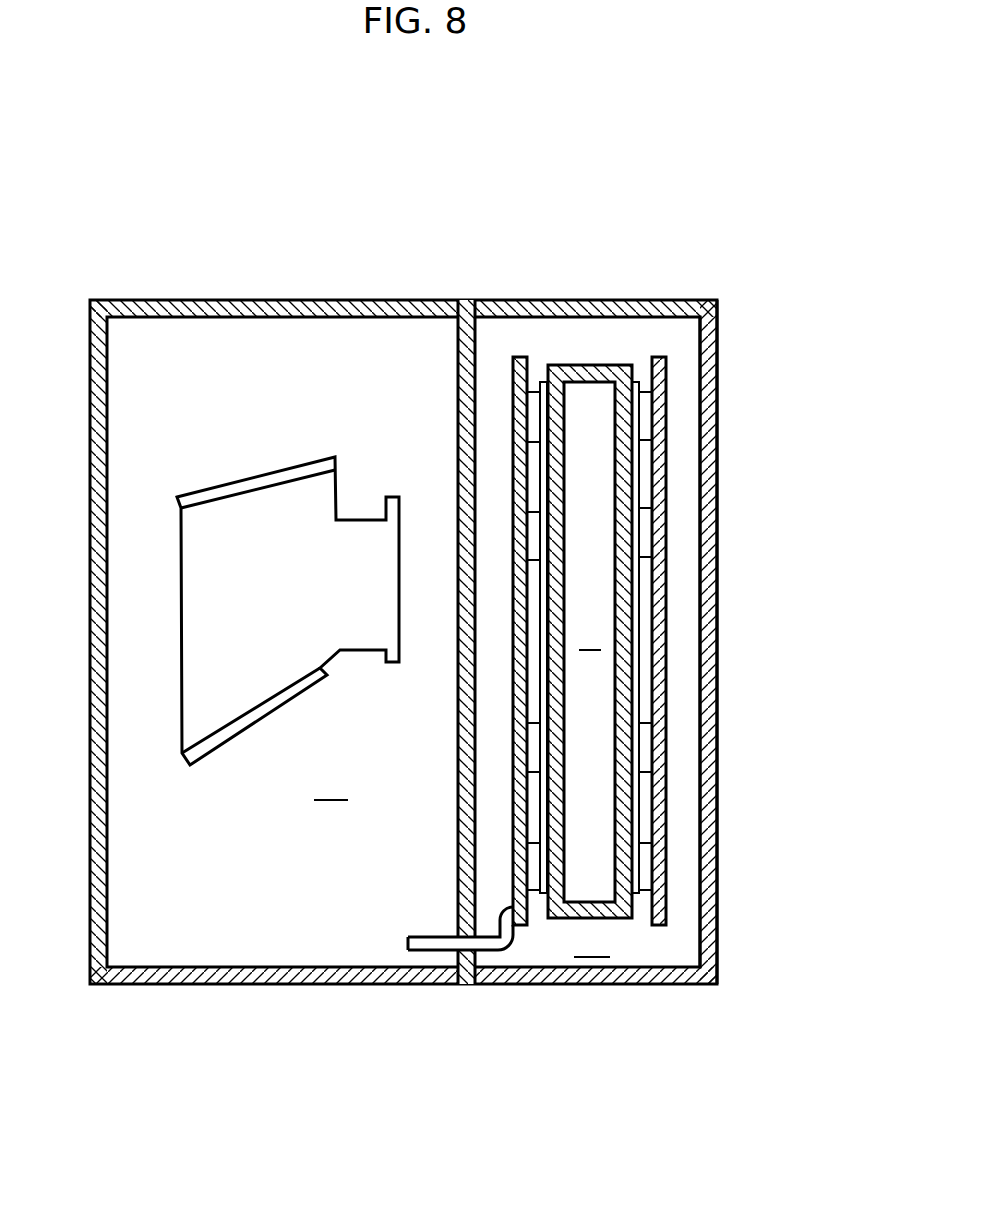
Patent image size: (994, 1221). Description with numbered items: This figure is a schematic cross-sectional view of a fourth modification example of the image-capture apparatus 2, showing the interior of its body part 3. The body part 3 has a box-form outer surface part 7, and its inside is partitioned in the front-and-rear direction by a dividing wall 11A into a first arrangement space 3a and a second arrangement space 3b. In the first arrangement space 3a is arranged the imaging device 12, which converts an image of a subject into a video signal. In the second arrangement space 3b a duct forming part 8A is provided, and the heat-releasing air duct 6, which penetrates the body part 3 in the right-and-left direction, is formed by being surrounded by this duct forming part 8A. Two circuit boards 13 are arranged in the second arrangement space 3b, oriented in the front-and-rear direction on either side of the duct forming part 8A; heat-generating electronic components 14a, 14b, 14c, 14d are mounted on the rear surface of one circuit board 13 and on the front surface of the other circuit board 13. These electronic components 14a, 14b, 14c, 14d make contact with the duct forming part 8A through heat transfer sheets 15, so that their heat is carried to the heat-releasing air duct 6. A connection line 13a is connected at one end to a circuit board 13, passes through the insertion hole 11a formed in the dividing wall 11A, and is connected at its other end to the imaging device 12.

The speaker system 2 is at (622, 177).
The body part 3 is at (448, 642).
The first arrangement space 3a is at (331, 786).
The second arrangement space 3b is at (592, 943).
The heat-releasing air duct 6 is at (590, 636).
The outer surface part 7 is at (717, 790).
The duct forming part 8A is at (600, 365).
The dividing wall 11A is at (458, 372).
The insertion hole 11a is at (470, 952).
The imaging device 12 is at (232, 735).
The circuit board 13 is at (518, 357).
The connection line 13a is at (428, 943).
The electronic component 14a is at (532, 392).
The electronic component 14b is at (768, 533).
The electronic component 14c is at (533, 750).
The electronic component 14d is at (537, 882).
The heat transfer sheet 15 is at (545, 380).